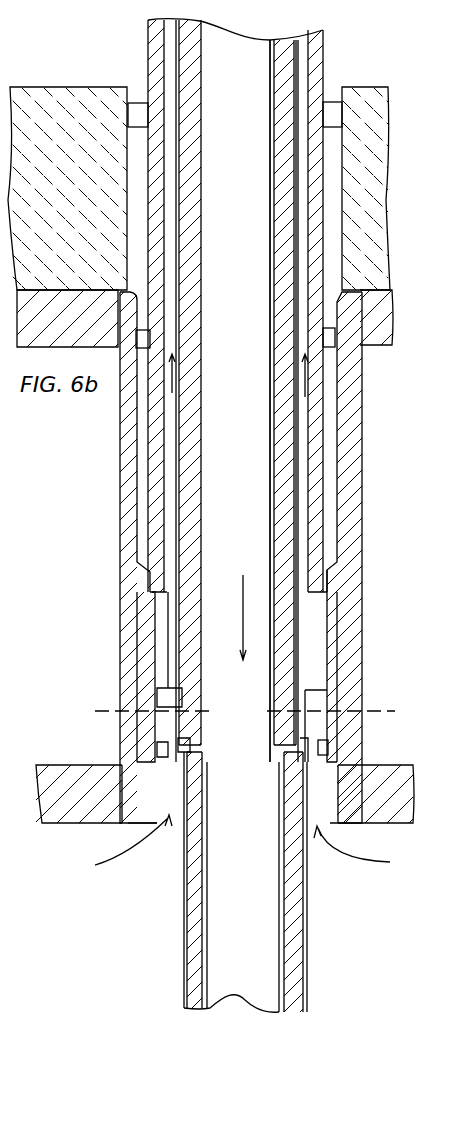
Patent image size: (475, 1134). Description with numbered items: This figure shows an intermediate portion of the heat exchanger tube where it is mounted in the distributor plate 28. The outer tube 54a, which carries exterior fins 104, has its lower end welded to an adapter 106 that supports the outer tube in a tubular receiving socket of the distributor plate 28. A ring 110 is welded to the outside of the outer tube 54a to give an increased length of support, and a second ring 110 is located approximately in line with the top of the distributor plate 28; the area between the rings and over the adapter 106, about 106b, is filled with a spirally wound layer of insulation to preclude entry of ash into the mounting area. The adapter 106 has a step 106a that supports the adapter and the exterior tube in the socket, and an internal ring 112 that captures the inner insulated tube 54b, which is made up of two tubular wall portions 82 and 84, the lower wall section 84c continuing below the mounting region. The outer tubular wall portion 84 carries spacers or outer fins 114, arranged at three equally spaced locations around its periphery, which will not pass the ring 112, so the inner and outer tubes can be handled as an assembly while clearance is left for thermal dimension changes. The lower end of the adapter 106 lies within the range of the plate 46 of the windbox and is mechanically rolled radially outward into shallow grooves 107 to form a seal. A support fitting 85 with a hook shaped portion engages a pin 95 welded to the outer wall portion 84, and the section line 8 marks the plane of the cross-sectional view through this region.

The section line 8- 8 is at (107, 698).
The distributor plate 28 is at (53, 133).
The top wall 46 is at (55, 785).
The outer tube 54a is at (343, 14).
The inner tube 54b is at (190, 898).
The inner tubular wall portion 82 is at (276, 486).
The outer tubular wall portion 84 is at (276, 508).
The lower conduit section 84c is at (305, 886).
The support fitting 85 is at (306, 762).
The pin 95 is at (191, 744).
The exterior fins 104 is at (10, 536).
The adapter 106 is at (288, 594).
The step 106a is at (118, 778).
The adapter region 106b is at (338, 562).
The shallow grooves 107 is at (128, 822).
The ring 110 is at (332, 108).
The internal ring 112 is at (329, 748).
The outer fins 114 is at (165, 700).